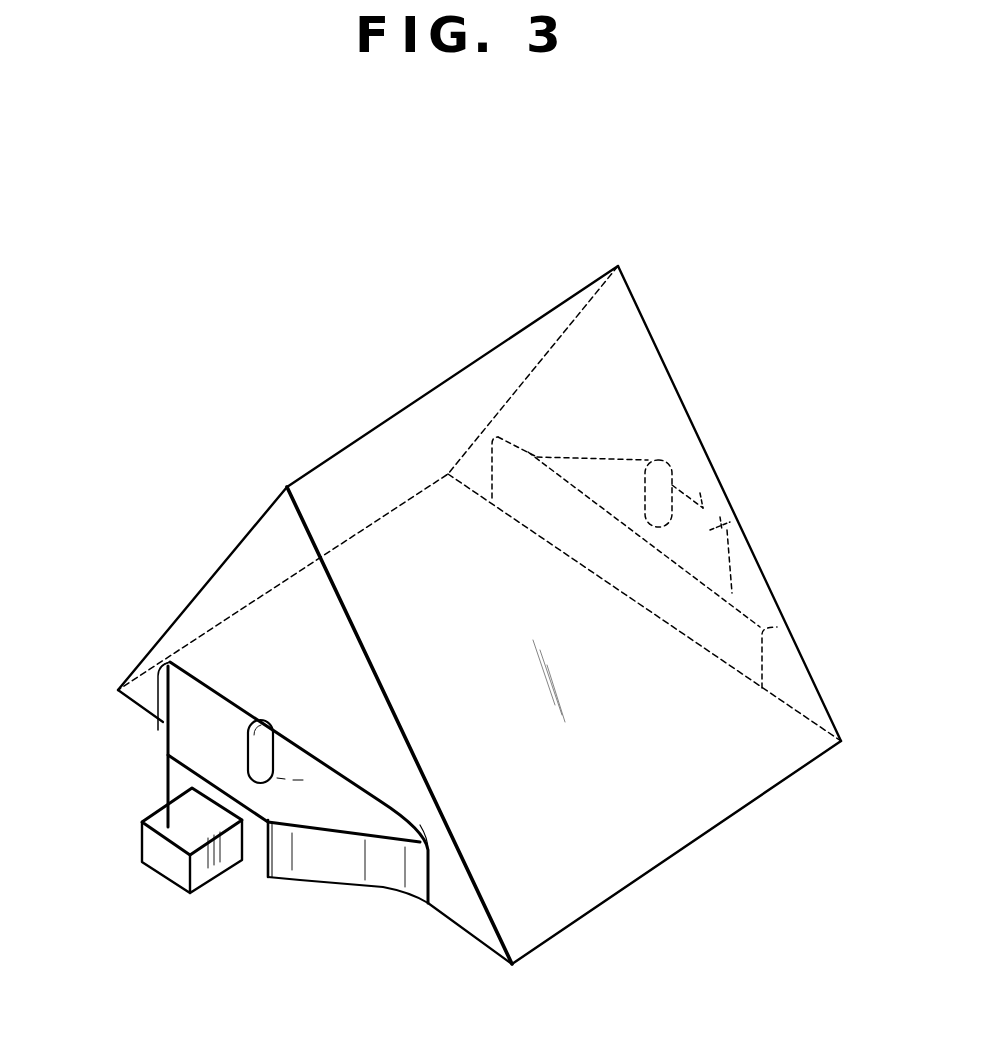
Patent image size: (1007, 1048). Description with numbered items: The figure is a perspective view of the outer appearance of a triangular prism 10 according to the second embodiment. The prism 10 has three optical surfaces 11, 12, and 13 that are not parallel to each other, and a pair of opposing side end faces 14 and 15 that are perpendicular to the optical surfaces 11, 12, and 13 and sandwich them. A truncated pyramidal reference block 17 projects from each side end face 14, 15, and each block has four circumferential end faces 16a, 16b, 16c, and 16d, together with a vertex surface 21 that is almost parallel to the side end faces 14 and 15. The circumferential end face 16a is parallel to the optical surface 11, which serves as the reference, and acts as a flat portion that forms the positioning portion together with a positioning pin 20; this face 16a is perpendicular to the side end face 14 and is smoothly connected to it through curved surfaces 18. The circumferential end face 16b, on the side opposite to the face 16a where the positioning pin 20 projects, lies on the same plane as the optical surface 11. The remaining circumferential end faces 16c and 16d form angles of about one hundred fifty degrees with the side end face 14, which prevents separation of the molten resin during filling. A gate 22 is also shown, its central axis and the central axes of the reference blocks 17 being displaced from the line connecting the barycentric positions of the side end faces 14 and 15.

The triangular prism 10 is at (479, 587).
The optical surface 11 is at (613, 875).
The optical surface 12 is at (395, 423).
The optical surface 13 is at (723, 792).
The side end face 14 is at (257, 543).
The side end face 15 is at (627, 318).
The circumferential end face 16a is at (730, 523).
The circumferential end face 16b is at (277, 880).
The circumferential end face 16c is at (587, 455).
The circumferential end face 16d is at (162, 728).
The reference block 17 is at (710, 500).
The curved surface 18 is at (510, 440).
The positioning pin 20 is at (257, 738).
The vertex surface 21 is at (180, 782).
The gate 22 is at (150, 871).